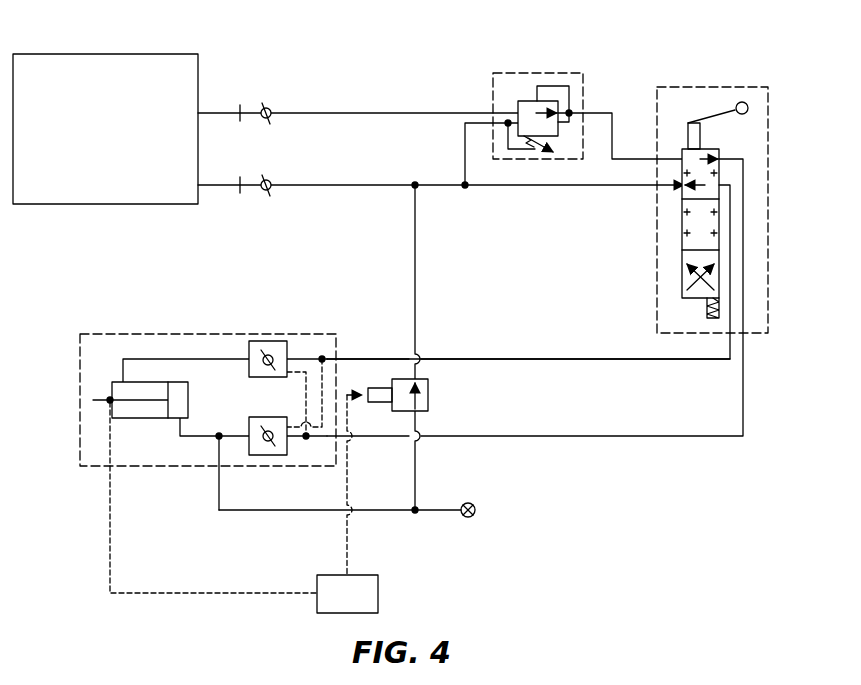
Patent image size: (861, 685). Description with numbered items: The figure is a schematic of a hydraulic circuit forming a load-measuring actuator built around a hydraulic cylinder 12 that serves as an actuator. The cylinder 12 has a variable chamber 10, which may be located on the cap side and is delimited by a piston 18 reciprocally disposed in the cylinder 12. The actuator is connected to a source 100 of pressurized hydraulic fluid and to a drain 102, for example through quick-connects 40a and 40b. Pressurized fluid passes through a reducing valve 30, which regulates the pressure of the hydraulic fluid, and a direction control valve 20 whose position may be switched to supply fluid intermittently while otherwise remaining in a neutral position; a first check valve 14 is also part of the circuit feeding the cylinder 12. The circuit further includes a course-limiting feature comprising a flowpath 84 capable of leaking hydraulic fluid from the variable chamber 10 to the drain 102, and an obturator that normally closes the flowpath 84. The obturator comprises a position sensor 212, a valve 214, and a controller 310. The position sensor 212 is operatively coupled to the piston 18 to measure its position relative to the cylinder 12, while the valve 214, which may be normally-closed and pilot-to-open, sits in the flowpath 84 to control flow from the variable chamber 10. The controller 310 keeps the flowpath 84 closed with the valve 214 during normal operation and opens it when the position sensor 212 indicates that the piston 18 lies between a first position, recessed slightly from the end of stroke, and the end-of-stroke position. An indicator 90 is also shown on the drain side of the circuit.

The variable chamber 10 is at (173, 398).
The hydraulic cylinder 12 is at (157, 419).
The first check valve 14 is at (250, 447).
The piston 18 is at (152, 396).
The direction control valve 20 is at (710, 87).
The reducing valve 30 is at (538, 73).
The quick-connect 40a is at (263, 106).
The quick-connect 40b is at (263, 193).
The flowpath 84 is at (416, 478).
The indicator 90 is at (477, 512).
The source of pressurized hydraulic fluid 100 is at (206, 112).
The drain 102 is at (206, 184).
The position sensor 212 is at (110, 402).
The valve 214 is at (429, 393).
The controller 310 is at (379, 592).